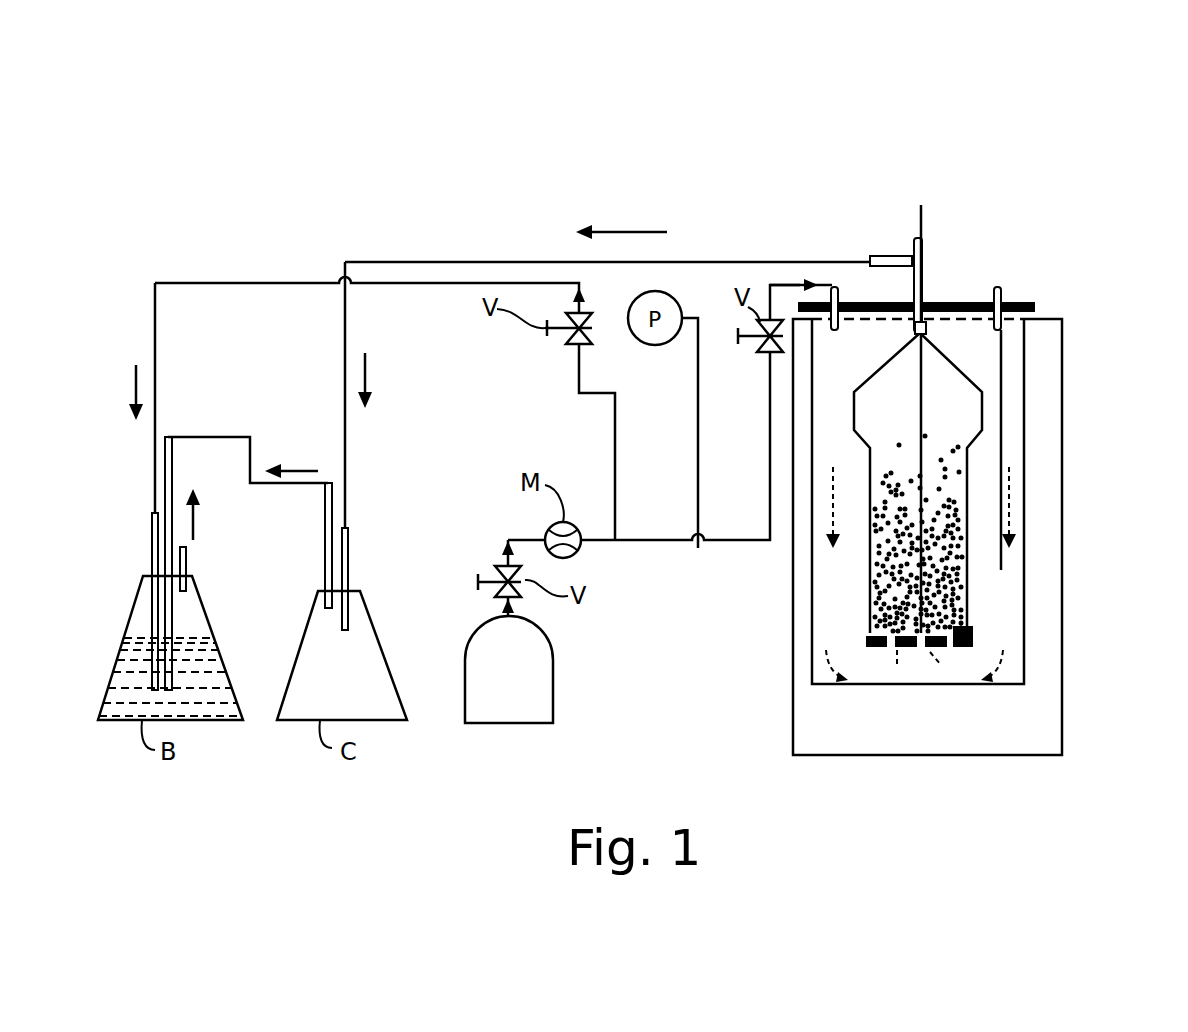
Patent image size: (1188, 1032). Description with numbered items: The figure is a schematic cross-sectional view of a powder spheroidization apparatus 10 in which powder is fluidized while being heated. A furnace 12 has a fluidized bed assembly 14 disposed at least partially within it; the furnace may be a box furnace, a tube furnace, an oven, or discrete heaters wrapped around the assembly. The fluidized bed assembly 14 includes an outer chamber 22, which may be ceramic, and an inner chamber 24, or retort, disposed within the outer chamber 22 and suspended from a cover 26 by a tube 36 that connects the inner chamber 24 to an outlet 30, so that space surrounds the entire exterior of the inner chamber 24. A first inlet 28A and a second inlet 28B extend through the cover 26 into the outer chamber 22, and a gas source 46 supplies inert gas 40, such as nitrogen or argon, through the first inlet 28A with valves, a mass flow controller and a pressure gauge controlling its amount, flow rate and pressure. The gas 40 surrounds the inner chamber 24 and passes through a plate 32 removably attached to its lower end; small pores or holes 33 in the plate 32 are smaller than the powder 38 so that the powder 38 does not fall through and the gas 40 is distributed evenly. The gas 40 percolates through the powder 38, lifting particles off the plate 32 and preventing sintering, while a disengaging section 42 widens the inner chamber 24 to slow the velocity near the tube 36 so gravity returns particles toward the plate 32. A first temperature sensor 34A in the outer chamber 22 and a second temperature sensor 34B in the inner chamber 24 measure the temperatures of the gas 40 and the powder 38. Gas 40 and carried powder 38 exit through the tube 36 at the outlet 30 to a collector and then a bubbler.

The powder spheroidization apparatus 10 is at (585, 182).
The furnace 12 is at (1062, 522).
The fluidized bed assembly 14 is at (1048, 402).
The outer chamber 22 is at (812, 587).
The inner chamber 24 is at (870, 610).
The cover 26 is at (952, 300).
The first inlet 28A is at (843, 296).
The second inlet 28B is at (1000, 288).
The outlet 30 is at (890, 256).
The plate 32 is at (922, 658).
The pores or holes 33 is at (948, 650).
The first temperature sensor 34A is at (1001, 348).
The second temperature sensor 34B is at (922, 217).
The tube 36 is at (912, 322).
The powder 38 is at (896, 598).
The gas 40 is at (795, 285).
The disengaging section 42 is at (826, 402).
The gas source 46 is at (553, 687).